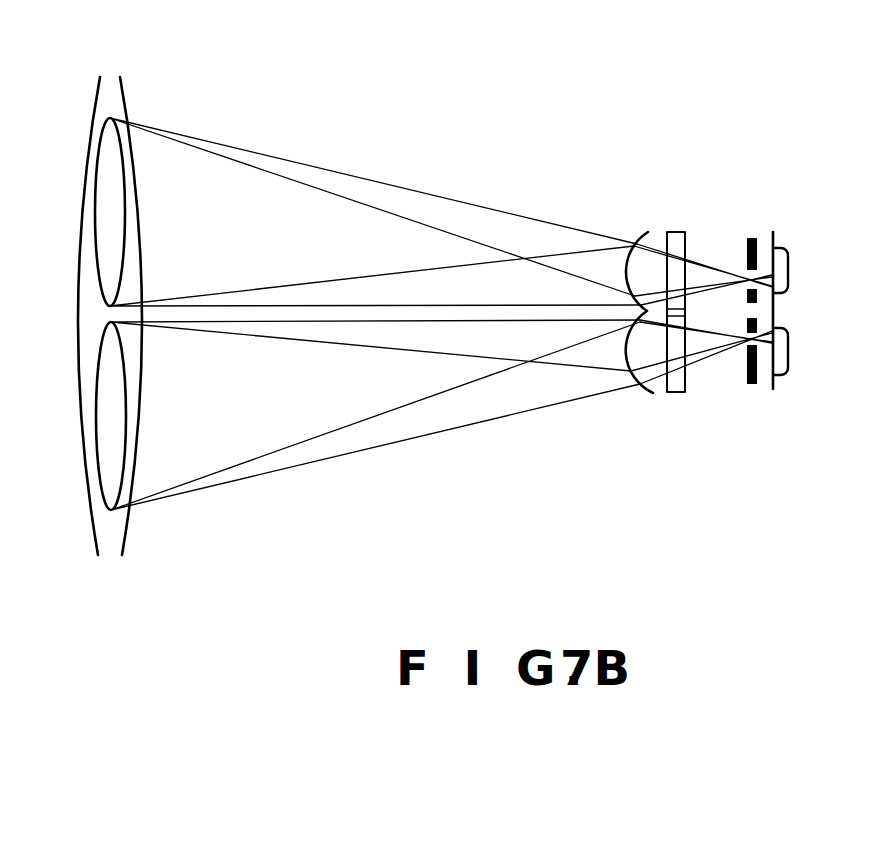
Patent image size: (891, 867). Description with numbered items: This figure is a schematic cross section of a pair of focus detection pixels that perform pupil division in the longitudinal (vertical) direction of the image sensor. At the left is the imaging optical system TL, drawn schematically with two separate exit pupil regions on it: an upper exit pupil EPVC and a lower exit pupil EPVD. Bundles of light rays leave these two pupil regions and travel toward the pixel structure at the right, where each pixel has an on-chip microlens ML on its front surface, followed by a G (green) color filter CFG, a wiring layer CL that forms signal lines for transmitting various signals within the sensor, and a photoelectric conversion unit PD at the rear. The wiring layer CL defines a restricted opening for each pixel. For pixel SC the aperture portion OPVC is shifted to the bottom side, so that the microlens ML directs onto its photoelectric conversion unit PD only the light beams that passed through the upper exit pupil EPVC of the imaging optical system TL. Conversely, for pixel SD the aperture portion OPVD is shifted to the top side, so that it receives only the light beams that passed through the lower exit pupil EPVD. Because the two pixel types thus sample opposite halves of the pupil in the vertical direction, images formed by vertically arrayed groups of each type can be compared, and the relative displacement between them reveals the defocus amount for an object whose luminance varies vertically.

The imaging optical system TL is at (103, 82).
The upper exit pupil EPVC is at (113, 182).
The lower exit pupil EPVD is at (117, 403).
The on-chip microlens ML is at (640, 352).
The G (green) color filter CFG is at (637, 433).
The aperture portion of pixel SC OPVC is at (742, 279).
The aperture portion of pixel SD OPVD is at (733, 344).
The wiring layer CL is at (752, 237).
The photoelectric conversion unit PD is at (782, 352).